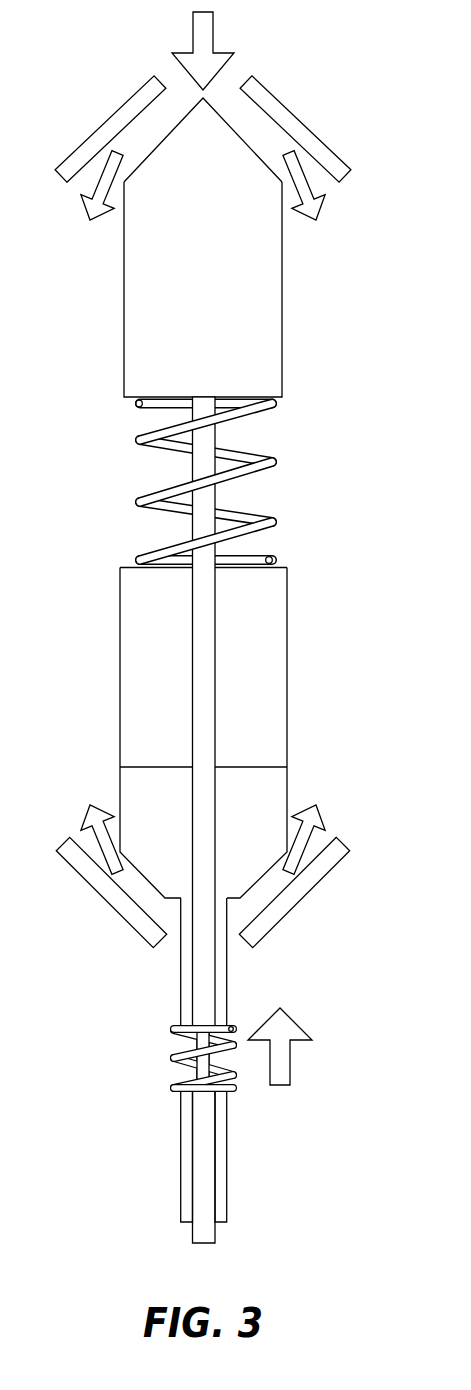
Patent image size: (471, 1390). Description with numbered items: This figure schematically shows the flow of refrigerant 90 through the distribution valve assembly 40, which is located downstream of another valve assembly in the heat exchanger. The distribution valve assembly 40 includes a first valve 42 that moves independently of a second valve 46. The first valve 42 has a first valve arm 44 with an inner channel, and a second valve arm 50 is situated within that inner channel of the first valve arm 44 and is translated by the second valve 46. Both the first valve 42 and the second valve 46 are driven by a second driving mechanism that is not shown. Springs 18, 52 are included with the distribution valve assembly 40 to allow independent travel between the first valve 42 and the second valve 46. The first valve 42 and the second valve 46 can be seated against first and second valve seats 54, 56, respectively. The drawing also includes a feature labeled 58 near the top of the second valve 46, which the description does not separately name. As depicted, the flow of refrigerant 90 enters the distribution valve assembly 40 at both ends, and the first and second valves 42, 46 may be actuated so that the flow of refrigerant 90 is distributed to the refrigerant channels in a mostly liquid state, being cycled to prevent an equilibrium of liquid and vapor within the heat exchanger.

The spring 18 is at (140, 438).
The distribution valve assembly 40 is at (366, 121).
The first valve 42 is at (157, 653).
The first valve arm 44 is at (180, 972).
The second valve 46 is at (253, 265).
The second valve arm 50 is at (188, 467).
The spring 52 is at (182, 1062).
The first valve seat 54 is at (128, 915).
The second valve seat 56 is at (118, 118).
The pointed cap 58 is at (240, 118).
The flow of refrigerant 90 is at (192, 42).